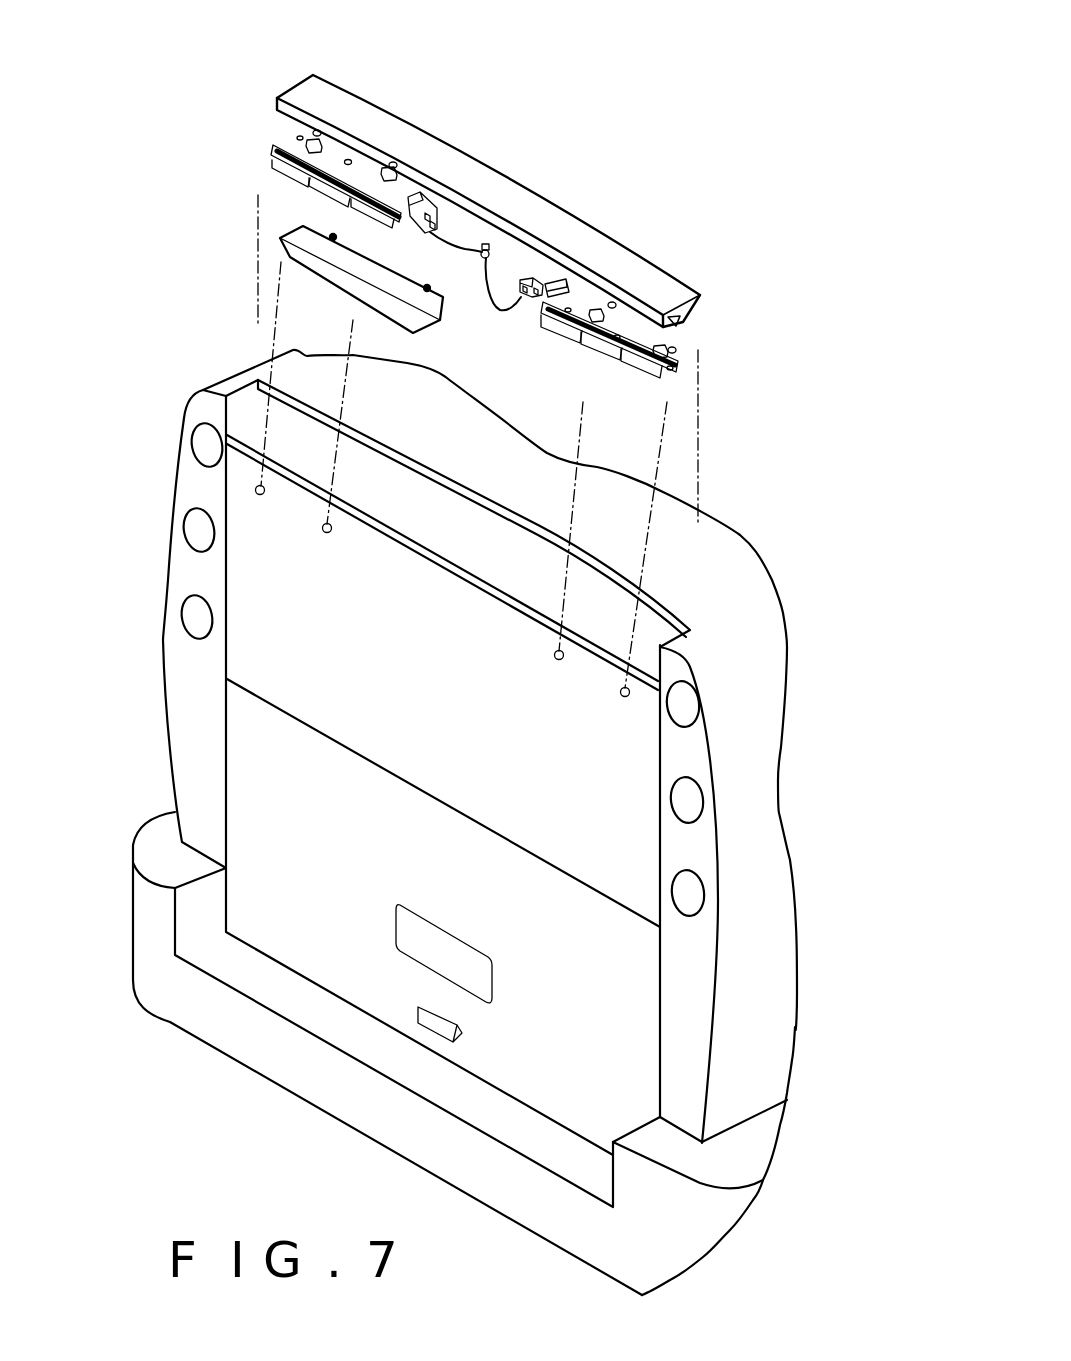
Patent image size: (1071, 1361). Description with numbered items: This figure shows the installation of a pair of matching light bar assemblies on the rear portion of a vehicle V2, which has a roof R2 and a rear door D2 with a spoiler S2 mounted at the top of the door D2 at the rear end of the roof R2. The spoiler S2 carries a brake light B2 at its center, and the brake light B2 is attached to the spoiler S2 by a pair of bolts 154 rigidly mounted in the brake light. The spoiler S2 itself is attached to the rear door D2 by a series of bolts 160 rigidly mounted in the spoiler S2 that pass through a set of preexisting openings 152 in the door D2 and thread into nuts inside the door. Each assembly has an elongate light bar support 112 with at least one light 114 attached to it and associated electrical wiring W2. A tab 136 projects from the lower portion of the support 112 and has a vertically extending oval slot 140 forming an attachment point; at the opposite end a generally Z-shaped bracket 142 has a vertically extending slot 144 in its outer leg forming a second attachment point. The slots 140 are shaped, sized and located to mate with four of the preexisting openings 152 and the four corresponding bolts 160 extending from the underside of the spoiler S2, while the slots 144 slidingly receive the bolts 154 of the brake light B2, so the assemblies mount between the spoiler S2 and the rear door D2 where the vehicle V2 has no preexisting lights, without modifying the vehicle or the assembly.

The light bar support 112 is at (352, 165).
The light 114 is at (335, 212).
The tab 136 is at (271, 145).
The slot 140 is at (316, 130).
The bracket 142 is at (430, 199).
The slot 144 is at (521, 277).
The preexisting openings 152 is at (323, 531).
The bolts 154 is at (333, 240).
The bolts 160 is at (320, 141).
The spoiler S2 is at (584, 213).
The electrical wiring W2 is at (453, 231).
The brake light B2 is at (291, 260).
The roof R2 is at (498, 469).
The rear door D2 is at (292, 823).
The vehicle V2 is at (845, 624).